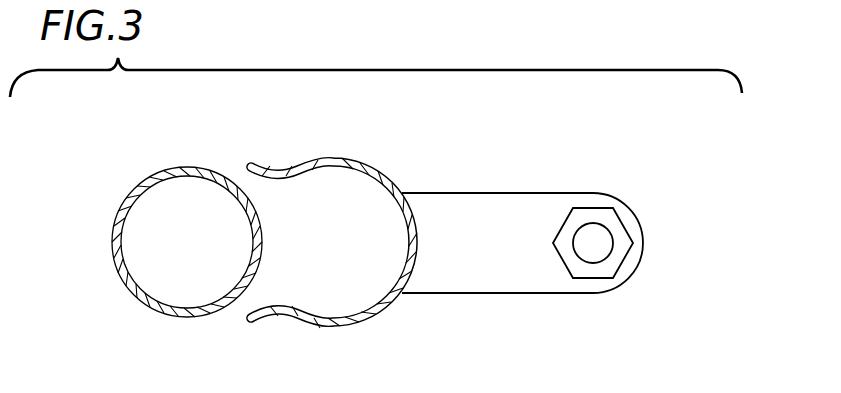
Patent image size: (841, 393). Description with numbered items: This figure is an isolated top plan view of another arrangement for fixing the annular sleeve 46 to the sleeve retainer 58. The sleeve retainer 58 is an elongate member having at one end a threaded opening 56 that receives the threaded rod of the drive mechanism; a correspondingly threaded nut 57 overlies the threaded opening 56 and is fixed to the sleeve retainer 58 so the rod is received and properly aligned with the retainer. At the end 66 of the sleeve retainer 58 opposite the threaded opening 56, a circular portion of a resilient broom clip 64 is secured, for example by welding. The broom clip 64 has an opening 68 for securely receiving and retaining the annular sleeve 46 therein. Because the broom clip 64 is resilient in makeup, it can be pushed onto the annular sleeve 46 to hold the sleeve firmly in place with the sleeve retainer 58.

The annular sleeve 46 is at (167, 170).
The threaded opening 56 is at (593, 243).
The threaded nut 57 is at (610, 218).
The sleeve retainer 58 is at (527, 303).
The broom clip 64 is at (304, 148).
The end of sleeve retainer 66 is at (452, 217).
The opening 68 is at (320, 272).